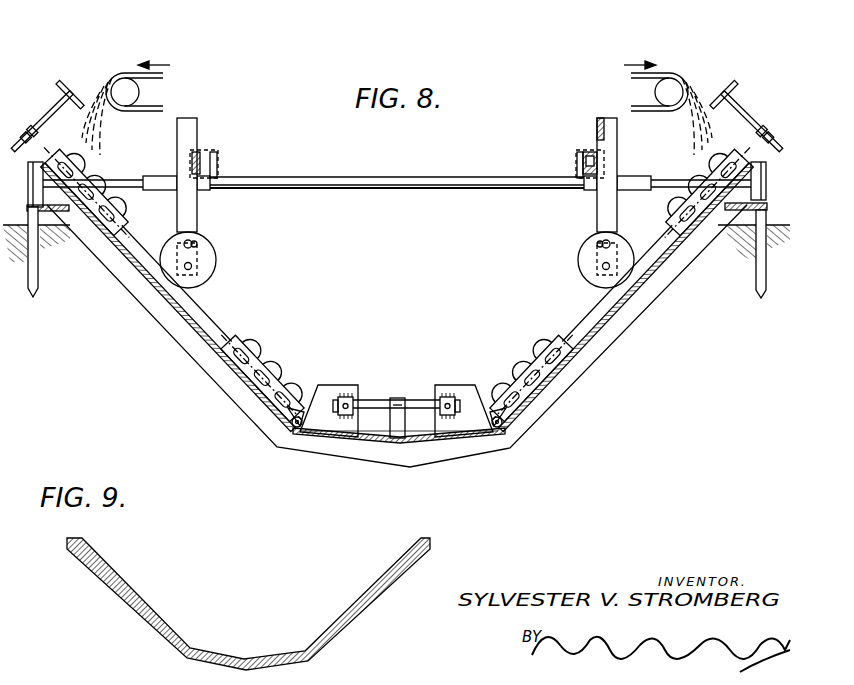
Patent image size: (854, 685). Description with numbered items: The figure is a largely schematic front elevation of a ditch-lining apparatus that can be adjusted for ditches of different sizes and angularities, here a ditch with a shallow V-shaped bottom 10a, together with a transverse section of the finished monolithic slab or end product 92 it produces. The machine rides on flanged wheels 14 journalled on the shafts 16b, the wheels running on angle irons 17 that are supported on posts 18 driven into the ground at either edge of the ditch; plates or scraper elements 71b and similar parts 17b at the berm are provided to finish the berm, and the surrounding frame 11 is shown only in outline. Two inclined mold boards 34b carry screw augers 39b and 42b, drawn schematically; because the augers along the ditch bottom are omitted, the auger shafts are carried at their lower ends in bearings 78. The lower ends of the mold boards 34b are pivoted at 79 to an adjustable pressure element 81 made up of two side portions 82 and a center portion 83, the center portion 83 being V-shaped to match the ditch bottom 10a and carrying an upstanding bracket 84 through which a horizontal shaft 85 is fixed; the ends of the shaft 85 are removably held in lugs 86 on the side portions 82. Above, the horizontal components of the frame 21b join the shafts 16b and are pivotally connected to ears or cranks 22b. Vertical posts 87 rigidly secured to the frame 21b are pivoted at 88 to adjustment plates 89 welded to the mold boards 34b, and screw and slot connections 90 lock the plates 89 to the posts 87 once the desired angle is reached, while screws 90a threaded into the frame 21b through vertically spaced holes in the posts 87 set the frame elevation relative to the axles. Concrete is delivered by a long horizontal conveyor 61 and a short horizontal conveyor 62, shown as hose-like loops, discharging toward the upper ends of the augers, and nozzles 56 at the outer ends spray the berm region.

In FIG. 8, the frame 11 is at (217, 379).
In FIG. 8, the mold boards 34b is at (163, 300).
In FIG. 8, the screw auger 39b is at (285, 346).
In FIG. 8, the screw auger 42b is at (517, 378).
In FIG. 8, the bearings 78 is at (292, 410).
In FIG. 8, the pivots 79 is at (293, 425).
In FIG. 8, the ditch bottom 10a is at (362, 462).
In FIG. 8, the center portion 83 is at (428, 441).
In FIG. 8, the side portions 82 is at (322, 385).
In FIG. 8, the horizontal shaft 85 is at (368, 400).
In FIG. 8, the upstanding bracket 84 is at (405, 398).
In FIG. 8, the adjustable pressure element 81 is at (405, 392).
In FIG. 8, the lugs 86 is at (345, 416).
In FIG. 8, the shafts 16b is at (392, 177).
In FIG. 8, the vertical posts 87 is at (190, 212).
In FIG. 8, the frame 21b is at (204, 150).
In FIG. 8, the ears or cranks 22b is at (218, 158).
In FIG. 8, the screws 90a is at (603, 160).
In FIG. 8, the adjustment plates 89 is at (204, 282).
In FIG. 8, the pivots 88 is at (195, 266).
In FIG. 8, the screw and slot connections 90 is at (196, 240).
In FIG. 8, the wheels 14 is at (35, 158).
In FIG. 8, the angle irons 17 is at (33, 208).
In FIG. 8, the ground anchor 17b is at (42, 232).
In FIG. 8, the plates or scraper elements 71b is at (738, 212).
In FIG. 8, the posts 18 is at (36, 285).
In FIG. 8, the nozzle 56 is at (40, 122).
In FIG. 8, the short horizontal conveyor 62 is at (131, 72).
In FIG. 8, the long horizontal conveyor 61 is at (667, 72).
In FIG. 9, the end product 92 is at (152, 618).